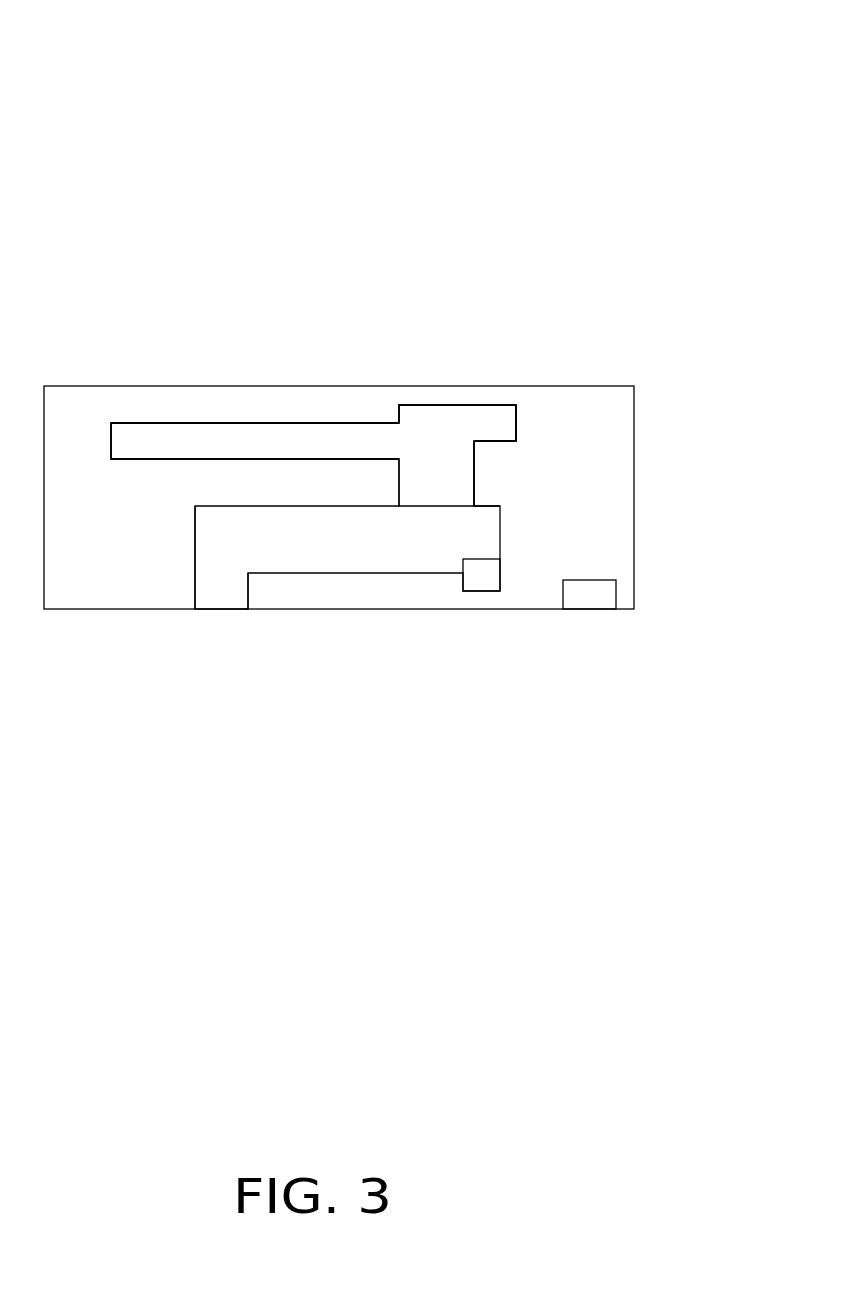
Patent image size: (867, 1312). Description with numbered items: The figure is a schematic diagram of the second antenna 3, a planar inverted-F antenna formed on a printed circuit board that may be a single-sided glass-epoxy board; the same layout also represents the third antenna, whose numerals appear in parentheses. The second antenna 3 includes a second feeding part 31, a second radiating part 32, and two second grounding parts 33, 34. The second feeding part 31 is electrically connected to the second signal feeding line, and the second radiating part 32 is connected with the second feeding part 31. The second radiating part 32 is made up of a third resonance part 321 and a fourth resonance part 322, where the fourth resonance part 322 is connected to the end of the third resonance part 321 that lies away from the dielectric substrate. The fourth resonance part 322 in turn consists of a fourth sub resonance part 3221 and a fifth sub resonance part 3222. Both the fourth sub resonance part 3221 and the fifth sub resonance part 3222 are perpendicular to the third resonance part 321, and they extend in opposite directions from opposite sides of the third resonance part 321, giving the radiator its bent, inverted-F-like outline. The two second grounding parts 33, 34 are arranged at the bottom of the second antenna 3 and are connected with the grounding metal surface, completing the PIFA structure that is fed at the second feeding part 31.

The second antenna 3 is at (393, 31).
The second radiating part 32 is at (690, 267).
The fourth resonance part 322 is at (575, 313).
The third resonance part 321 is at (460, 479).
The fourth sub resonance part 3221 is at (285, 437).
The fifth sub resonance part 3222 is at (500, 416).
The second grounding part 33 is at (233, 602).
The second feeding part 31 is at (485, 582).
The second grounding part 34 is at (603, 593).